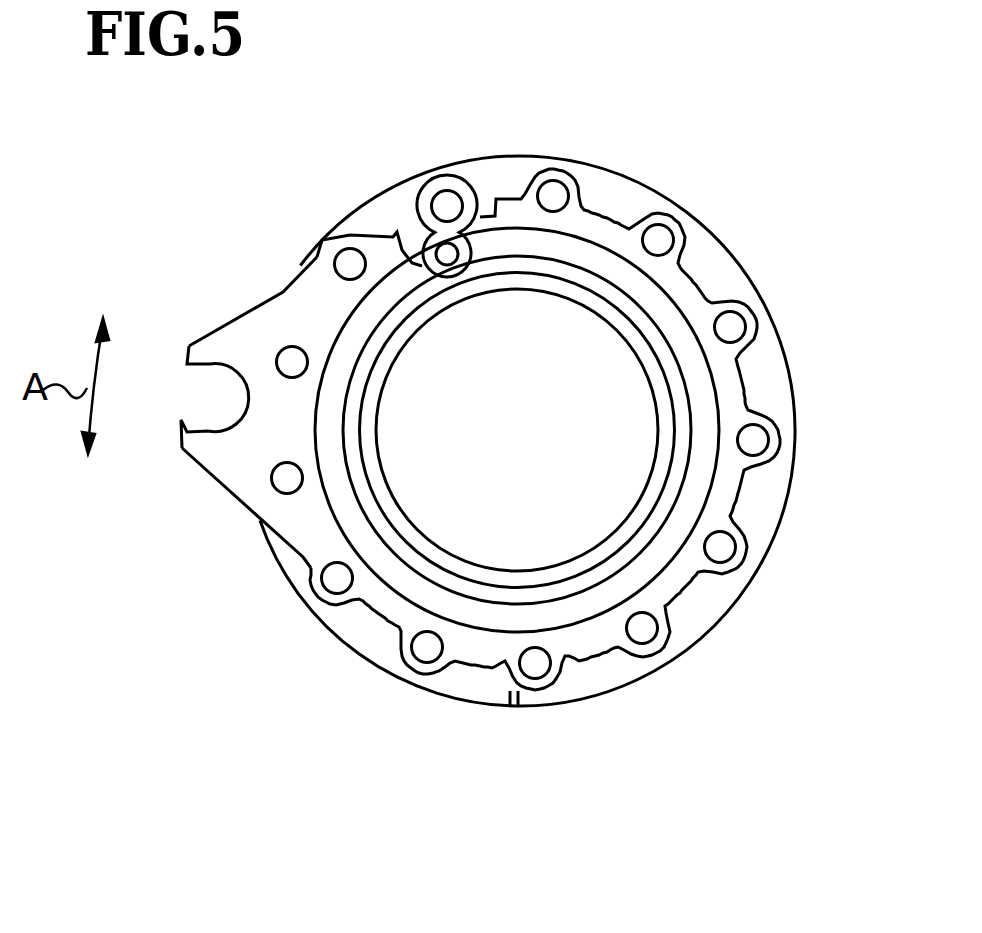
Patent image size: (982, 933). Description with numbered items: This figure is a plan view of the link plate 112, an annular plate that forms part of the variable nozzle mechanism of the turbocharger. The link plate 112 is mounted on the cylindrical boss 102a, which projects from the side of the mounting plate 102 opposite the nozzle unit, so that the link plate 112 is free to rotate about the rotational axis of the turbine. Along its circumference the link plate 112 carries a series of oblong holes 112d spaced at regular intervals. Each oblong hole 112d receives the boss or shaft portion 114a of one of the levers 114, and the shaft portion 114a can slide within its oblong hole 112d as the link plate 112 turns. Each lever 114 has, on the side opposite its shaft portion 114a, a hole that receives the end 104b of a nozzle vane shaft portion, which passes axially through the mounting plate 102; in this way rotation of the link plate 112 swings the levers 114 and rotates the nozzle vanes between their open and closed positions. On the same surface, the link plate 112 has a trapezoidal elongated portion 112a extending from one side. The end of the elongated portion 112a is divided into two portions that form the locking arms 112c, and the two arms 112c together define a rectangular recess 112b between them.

The mounting plate 102 is at (720, 282).
The cylindrical boss 102a is at (700, 488).
The end of shaft portion 104b is at (397, 236).
The link plate 112 is at (617, 222).
The trapezoidal elongated portion 112a is at (244, 419).
The rectangular recess 112b is at (182, 425).
The locking arms 112c is at (215, 355).
The oblong holes 112d is at (667, 637).
The lever 114 is at (437, 187).
The boss or shaft portion of lever 114a is at (453, 207).